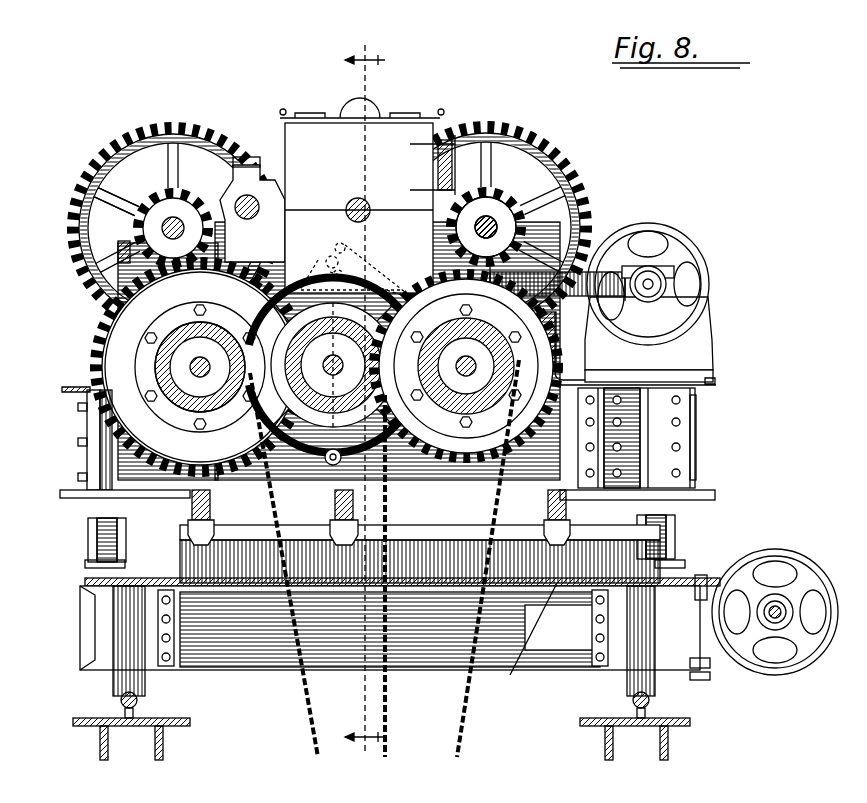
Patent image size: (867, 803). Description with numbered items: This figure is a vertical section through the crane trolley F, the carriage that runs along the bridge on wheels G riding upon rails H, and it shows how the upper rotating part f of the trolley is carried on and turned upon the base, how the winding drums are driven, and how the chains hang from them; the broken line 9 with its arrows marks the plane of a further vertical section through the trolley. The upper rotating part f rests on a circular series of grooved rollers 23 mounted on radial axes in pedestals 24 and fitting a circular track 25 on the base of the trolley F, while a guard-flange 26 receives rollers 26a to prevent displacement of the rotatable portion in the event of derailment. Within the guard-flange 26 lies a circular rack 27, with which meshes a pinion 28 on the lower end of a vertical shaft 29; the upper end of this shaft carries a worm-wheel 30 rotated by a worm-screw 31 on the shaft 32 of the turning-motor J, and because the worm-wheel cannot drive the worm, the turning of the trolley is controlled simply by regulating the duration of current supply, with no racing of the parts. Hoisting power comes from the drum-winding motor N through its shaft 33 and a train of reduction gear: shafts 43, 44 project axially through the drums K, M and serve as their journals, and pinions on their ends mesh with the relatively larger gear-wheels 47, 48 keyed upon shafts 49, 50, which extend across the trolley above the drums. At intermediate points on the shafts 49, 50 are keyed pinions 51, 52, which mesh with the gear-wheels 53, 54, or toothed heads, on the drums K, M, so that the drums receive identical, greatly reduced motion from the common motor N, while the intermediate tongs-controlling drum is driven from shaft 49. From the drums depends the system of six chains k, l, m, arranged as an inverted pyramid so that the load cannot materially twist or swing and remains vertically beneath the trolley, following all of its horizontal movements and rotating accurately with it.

The section line 9 9 is at (365, 391).
The gear-wheel 47 is at (173, 210).
The gear-wheel 48 is at (486, 209).
The shaft 49 is at (162, 228).
The shaft 50 is at (498, 215).
The pinion 51 is at (150, 205).
The pinion 52 is at (510, 232).
The gear-wheel 53 is at (110, 308).
The gear-wheel 54 is at (520, 248).
The shaft 43 is at (156, 348).
The winding-motor shaft 33 is at (359, 200).
The worm-wheel 30 is at (600, 265).
The worm-screw 31 is at (658, 266).
The shaft 32 is at (652, 284).
The shaft 44 is at (562, 358).
The vertical shaft 29 is at (632, 416).
The pedestal 24 is at (82, 504).
The grooved roller 23 is at (102, 537).
The circular track 25 is at (92, 572).
The guard-flange 26 is at (379, 507).
The roller 26a is at (379, 523).
The circular rack 27 is at (420, 554).
The pinion 28 is at (531, 641).
The drum-winding motor N is at (367, 195).
The turning-motor J is at (712, 430).
The drum K is at (200, 367).
The drum M is at (466, 366).
The trolley F is at (390, 628).
The wheel G is at (113, 688).
The rail H is at (138, 706).
The foot A is at (381, 739).
The upper rotating part f is at (88, 442).
The chain k is at (291, 565).
The chain l is at (393, 576).
The chain m is at (488, 558).